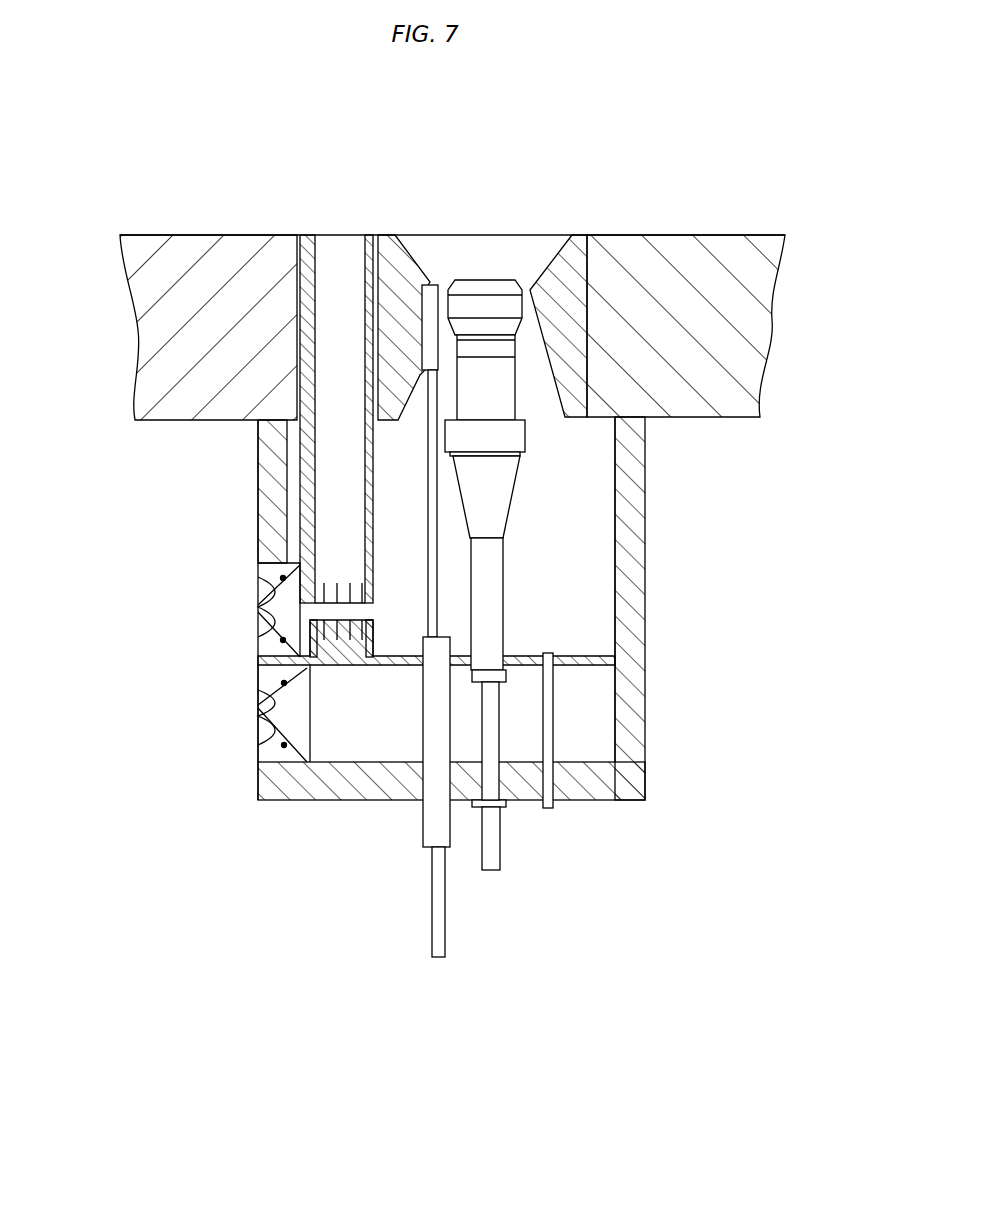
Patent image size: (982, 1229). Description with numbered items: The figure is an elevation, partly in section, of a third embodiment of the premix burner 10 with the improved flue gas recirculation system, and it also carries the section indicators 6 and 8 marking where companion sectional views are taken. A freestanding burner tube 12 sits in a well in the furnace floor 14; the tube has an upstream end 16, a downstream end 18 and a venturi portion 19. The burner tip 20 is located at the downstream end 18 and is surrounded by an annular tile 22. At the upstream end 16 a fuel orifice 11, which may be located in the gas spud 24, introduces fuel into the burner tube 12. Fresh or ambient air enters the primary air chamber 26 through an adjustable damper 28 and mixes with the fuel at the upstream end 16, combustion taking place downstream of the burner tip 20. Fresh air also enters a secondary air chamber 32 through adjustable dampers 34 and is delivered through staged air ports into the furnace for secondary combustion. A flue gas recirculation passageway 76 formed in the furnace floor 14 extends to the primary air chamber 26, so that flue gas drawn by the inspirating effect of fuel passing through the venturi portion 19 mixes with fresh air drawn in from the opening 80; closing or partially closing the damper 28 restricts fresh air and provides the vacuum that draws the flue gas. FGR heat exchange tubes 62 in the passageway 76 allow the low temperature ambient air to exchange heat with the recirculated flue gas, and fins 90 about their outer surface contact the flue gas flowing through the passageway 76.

The section line 6- 6 is at (450, 177).
The section line 8- 8 is at (447, 581).
The premix burner 10 is at (546, 178).
The fuel orifice 11 is at (487, 668).
The burner tube 12 is at (505, 590).
The furnace floor 14 is at (190, 240).
The upstream end 16 is at (505, 655).
The downstream end 18 is at (465, 278).
The venturi portion 19 is at (510, 502).
The burner tip 20 is at (495, 278).
The annular tile 22 is at (388, 240).
The gas spud 24 is at (497, 683).
The primary air chamber 26 is at (374, 725).
The adjustable damper 28 is at (280, 718).
The secondary air chamber 32 is at (589, 571).
The adjustable dampers 34 is at (270, 608).
The FGR heat exchange tubes 62 is at (360, 611).
The flue gas recirculation passageway 76 is at (350, 386).
The opening 80 is at (273, 752).
The fins 90 is at (343, 565).